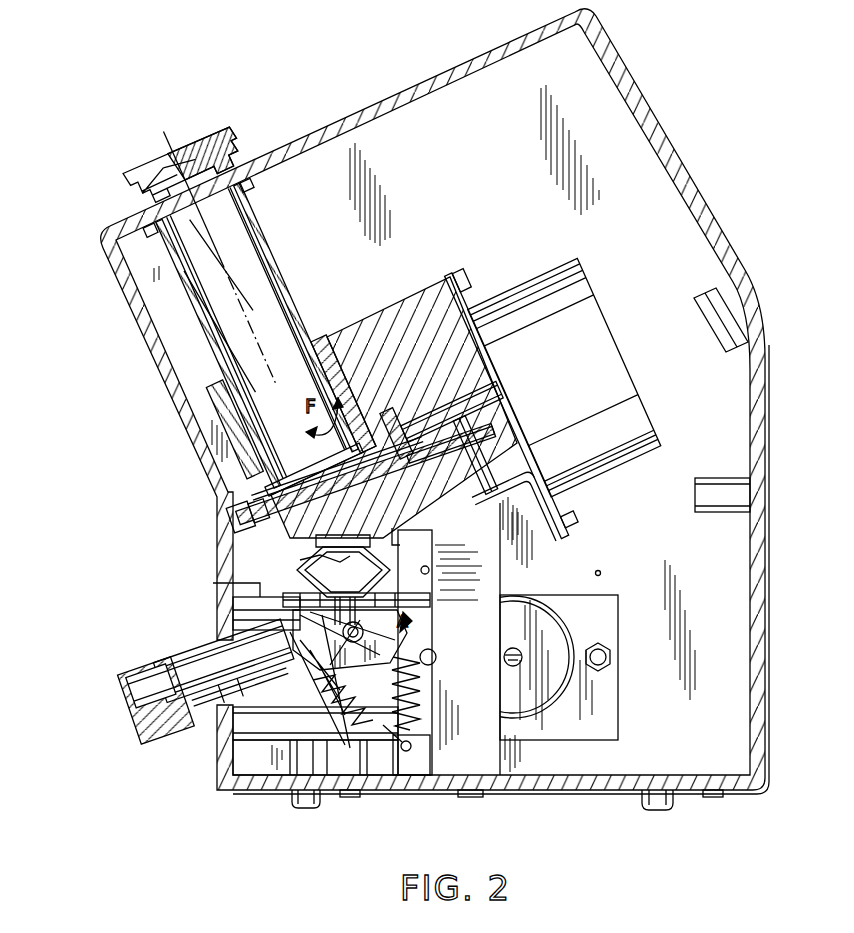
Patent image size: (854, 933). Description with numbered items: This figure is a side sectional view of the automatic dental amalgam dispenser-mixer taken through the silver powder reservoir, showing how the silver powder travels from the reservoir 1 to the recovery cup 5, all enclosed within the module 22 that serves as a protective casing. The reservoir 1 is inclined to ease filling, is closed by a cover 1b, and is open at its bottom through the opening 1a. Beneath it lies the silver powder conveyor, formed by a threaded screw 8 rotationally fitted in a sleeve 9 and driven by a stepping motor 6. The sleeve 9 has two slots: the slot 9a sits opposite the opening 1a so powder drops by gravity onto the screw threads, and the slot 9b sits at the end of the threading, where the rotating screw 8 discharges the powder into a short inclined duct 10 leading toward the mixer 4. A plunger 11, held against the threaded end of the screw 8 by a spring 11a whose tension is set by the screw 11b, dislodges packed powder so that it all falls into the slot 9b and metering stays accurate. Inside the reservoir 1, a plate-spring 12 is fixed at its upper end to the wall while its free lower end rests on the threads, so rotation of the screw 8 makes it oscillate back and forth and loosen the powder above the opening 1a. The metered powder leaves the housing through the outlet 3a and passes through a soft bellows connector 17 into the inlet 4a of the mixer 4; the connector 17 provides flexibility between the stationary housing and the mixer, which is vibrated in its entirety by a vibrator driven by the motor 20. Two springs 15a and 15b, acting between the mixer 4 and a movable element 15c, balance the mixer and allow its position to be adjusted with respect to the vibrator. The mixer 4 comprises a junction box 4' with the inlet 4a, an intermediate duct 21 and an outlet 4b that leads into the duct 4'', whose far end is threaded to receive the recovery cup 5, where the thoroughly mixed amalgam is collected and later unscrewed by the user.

The silver powder reservoir 1 is at (265, 267).
The opening 1a is at (313, 475).
The cover 1b is at (212, 150).
The outlet 3a is at (320, 537).
The mixer 4 is at (278, 679).
The inlet orifice 4a is at (300, 577).
The outlet 4b is at (300, 640).
The junction box 4' is at (323, 693).
The duct 4'' is at (237, 718).
The recovery cup 5 is at (143, 740).
The stepping motor 6 is at (557, 351).
The threaded screw 8 is at (267, 507).
The sleeve 9 is at (263, 517).
The slot 9a is at (273, 500).
The slot 9b is at (407, 468).
The inclined duct 10 is at (446, 639).
The plunger 11 is at (397, 422).
The spring 11a is at (380, 368).
The screw 11b is at (342, 330).
The plate-spring 12 is at (273, 443).
The spring 15a is at (370, 713).
The spring 15b is at (417, 667).
The movable element 15c is at (423, 743).
The connector 17 is at (305, 560).
The motor 20 is at (607, 628).
The intermediate duct 21 is at (268, 646).
The module 22 is at (640, 110).